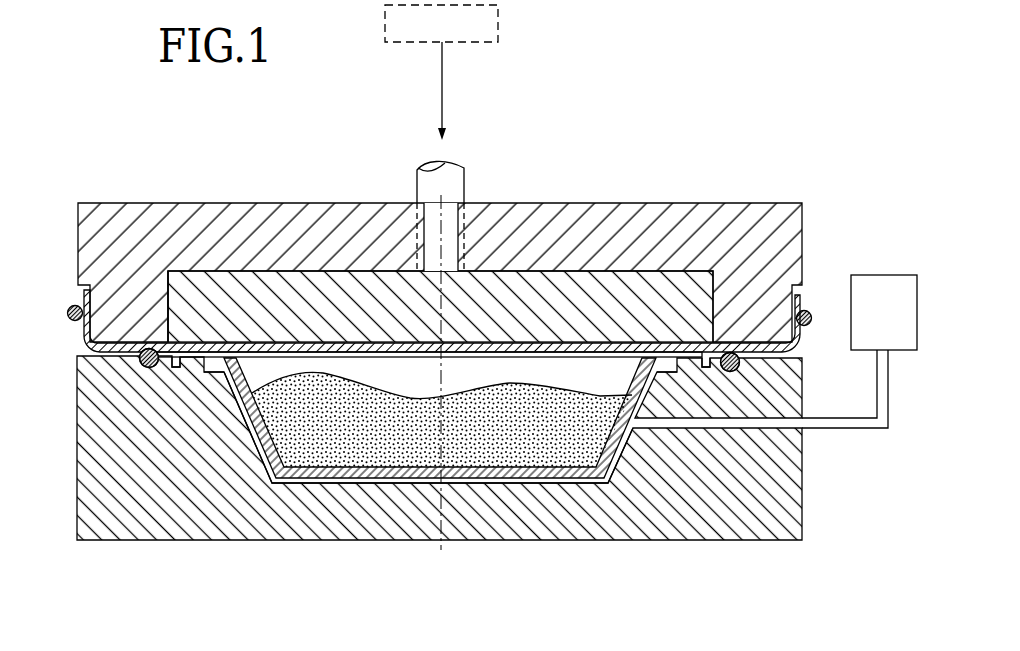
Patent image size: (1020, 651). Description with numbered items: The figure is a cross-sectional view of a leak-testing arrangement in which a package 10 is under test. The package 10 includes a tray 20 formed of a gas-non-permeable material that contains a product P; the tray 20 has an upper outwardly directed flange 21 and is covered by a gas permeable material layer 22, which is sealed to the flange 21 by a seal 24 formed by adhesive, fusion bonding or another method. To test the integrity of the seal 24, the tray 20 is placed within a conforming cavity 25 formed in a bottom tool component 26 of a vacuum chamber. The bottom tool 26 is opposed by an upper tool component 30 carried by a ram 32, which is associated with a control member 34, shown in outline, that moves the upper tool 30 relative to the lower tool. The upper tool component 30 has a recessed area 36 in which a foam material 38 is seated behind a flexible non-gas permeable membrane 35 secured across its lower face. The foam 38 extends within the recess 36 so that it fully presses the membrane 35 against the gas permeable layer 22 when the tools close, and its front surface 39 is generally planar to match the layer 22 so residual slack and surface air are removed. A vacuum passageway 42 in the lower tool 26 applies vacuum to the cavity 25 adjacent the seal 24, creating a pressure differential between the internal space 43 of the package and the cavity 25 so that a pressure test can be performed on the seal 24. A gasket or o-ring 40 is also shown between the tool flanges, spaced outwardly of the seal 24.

The package 10 is at (421, 473).
The tray 20 is at (380, 473).
The flange 21 is at (203, 370).
The gas permeable material layer 22 is at (613, 358).
The seal 24 is at (172, 368).
The cavity 25 is at (575, 484).
The tool component 26 is at (730, 515).
The upper tool component 30 is at (768, 218).
The ram 32 is at (464, 181).
The control member 34 is at (498, 22).
The flexible non-gas permeable membrane 35 is at (798, 343).
The recessed area 36 is at (200, 284).
The foam material 38 is at (308, 288).
The front surface 39 is at (305, 346).
The O-ring seal 40 is at (165, 364).
The vacuum passageway 42 is at (783, 422).
The internal space 43 is at (485, 446).
The product P is at (488, 398).